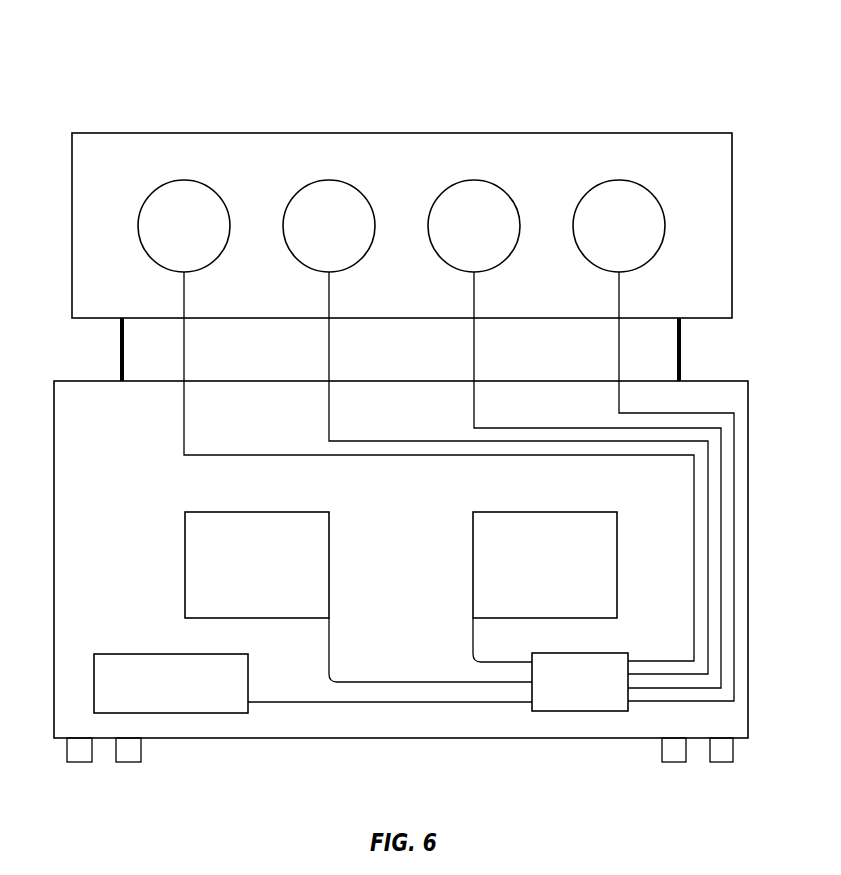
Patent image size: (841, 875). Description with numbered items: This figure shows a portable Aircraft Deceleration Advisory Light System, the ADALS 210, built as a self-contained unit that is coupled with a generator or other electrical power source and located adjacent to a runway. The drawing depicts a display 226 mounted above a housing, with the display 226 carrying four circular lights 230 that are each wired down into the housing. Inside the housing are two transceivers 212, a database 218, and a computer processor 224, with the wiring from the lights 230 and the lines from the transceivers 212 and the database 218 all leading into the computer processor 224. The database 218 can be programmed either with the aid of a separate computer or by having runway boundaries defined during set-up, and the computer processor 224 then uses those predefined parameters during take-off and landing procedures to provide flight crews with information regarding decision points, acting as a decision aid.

The ADALS 210 is at (124, 62).
The display 226 is at (396, 131).
The vessel receptacles 230 is at (329, 180).
The transceiver 212 is at (504, 632).
The database 218 is at (166, 654).
The computer processor 224 is at (580, 711).